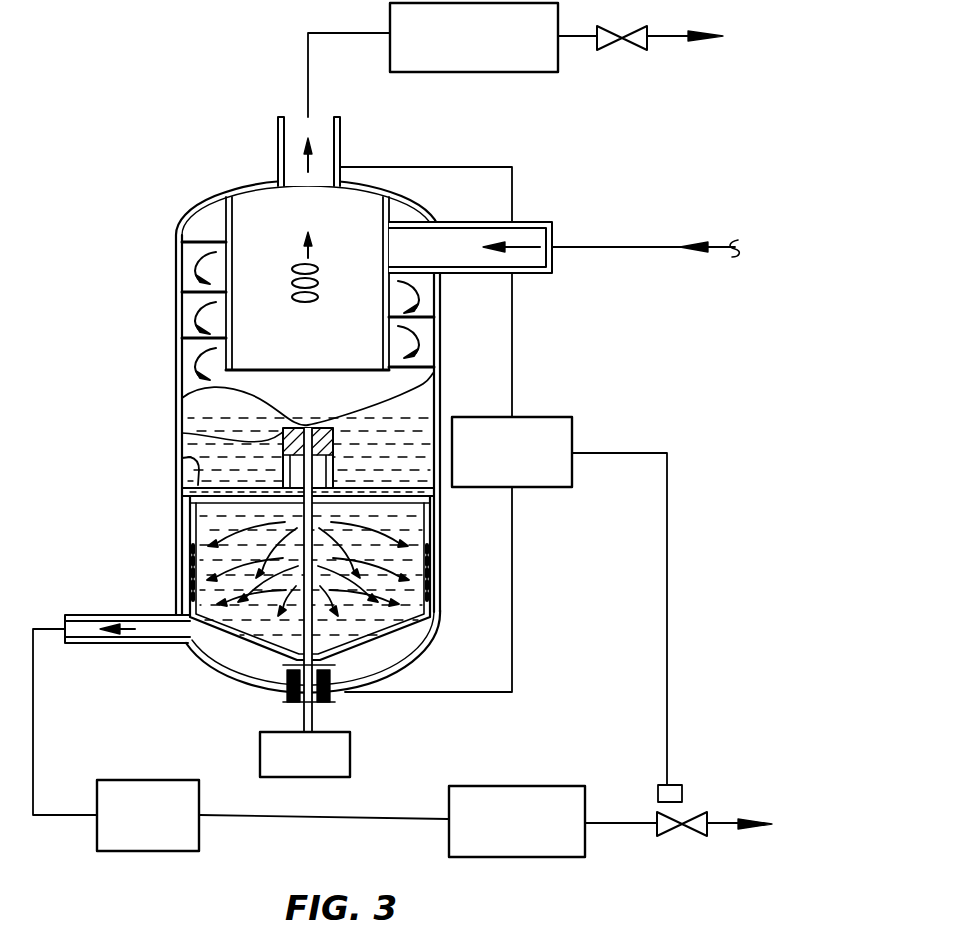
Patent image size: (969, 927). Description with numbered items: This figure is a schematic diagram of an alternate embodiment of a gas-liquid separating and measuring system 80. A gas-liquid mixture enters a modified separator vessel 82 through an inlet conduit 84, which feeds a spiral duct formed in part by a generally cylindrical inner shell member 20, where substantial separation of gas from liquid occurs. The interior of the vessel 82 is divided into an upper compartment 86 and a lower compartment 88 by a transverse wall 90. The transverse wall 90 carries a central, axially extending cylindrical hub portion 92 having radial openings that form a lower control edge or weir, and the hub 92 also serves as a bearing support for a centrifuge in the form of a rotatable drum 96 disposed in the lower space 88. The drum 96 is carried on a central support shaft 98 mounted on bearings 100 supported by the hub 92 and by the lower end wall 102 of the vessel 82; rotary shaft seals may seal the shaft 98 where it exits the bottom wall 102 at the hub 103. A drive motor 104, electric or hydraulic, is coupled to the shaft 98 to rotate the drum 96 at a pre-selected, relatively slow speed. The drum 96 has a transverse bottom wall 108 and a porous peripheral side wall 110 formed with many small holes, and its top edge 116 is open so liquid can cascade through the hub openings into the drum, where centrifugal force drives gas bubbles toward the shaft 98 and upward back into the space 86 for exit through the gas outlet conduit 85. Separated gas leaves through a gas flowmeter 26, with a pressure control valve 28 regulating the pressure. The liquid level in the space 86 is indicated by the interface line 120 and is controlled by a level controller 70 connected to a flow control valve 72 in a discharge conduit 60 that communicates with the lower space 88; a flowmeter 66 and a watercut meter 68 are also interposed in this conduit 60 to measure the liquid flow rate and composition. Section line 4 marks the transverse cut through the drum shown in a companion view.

The section line 4- 4 is at (110, 545).
The inner shell member 20 is at (385, 367).
The gas flowmeter 26 is at (490, 72).
The pressure control valve 28 is at (622, 50).
The discharge conduit 60 is at (100, 645).
The flowmeter 66 is at (97, 838).
The watercut meter 68 is at (586, 840).
The level controller 70 is at (572, 437).
The flow control valve 72 is at (708, 836).
The system 80 is at (571, 221).
The separator vessel 82 is at (270, 183).
The inlet conduit 84 is at (457, 221).
The gas outlet conduit 85 is at (341, 146).
The upper compartment (space) 86 is at (318, 404).
The lower compartment (space) 88 is at (258, 627).
The transverse wall 90 is at (182, 458).
The cylindrical hub portion 92 is at (182, 433).
The rotatable drum 96 is at (220, 650).
The central support shaft 98 is at (289, 672).
The bearings 100 is at (331, 690).
The lower end wall 102 is at (283, 668).
The hub 103 is at (332, 702).
The drive motor 104 is at (350, 755).
The transverse bottom wall 108 is at (425, 640).
The porous peripheral side wall 110 is at (190, 533).
The top edge 116 is at (436, 494).
The interface line 120 is at (185, 400).